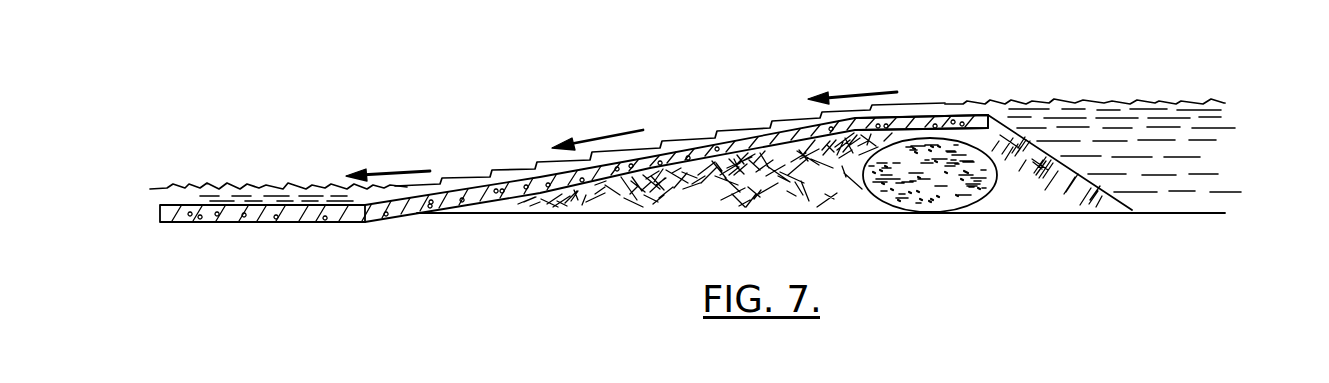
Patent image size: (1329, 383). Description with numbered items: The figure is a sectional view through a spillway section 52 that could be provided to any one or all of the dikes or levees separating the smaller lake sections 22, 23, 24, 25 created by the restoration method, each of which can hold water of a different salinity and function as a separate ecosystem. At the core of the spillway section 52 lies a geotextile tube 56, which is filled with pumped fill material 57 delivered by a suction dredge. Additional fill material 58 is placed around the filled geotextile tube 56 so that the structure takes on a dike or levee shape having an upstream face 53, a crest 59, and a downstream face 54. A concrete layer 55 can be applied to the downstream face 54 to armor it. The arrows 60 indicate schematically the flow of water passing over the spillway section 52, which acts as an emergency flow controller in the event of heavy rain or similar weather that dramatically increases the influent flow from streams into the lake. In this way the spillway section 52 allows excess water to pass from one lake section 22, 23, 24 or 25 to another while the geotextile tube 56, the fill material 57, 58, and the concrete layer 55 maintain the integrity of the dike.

The smaller lake section 22 is at (717, 128).
The smaller lake section 23 is at (717, 128).
The smaller lake section 24 is at (717, 128).
The smaller lake section 25 is at (1112, 104).
The spillway section 52 is at (1056, 62).
The upstream face 53 is at (1131, 210).
The downstream face 54 is at (750, 138).
The concrete layer 55 is at (487, 175).
The geotextile tube 56 is at (983, 200).
The pumped fill material 57 is at (924, 182).
The additional fill material 58 is at (720, 204).
The crest 59 is at (953, 115).
The arrows 60 is at (401, 171).